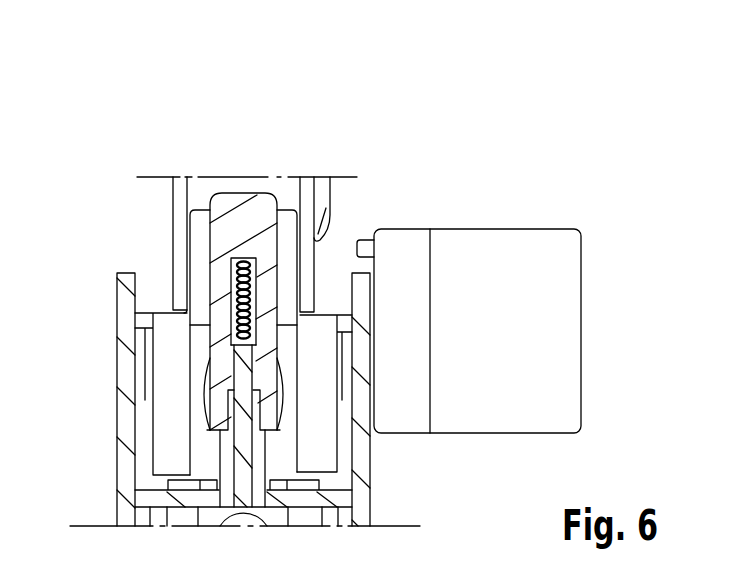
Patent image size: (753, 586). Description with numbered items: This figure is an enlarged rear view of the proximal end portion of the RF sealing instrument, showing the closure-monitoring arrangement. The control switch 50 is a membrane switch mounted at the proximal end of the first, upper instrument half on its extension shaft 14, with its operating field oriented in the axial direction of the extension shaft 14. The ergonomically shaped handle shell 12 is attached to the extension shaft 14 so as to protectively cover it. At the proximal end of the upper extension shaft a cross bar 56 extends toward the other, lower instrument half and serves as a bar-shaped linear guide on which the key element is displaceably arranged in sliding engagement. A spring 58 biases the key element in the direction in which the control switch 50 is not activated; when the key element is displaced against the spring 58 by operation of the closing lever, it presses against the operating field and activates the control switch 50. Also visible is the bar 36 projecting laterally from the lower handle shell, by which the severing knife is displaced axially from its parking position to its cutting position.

The control switch 50 is at (368, 273).
The handle shell 12 is at (332, 196).
The extension shaft 14 is at (174, 240).
The spring 58 is at (236, 334).
The cross bar 56 is at (300, 457).
The bar 36 is at (581, 270).